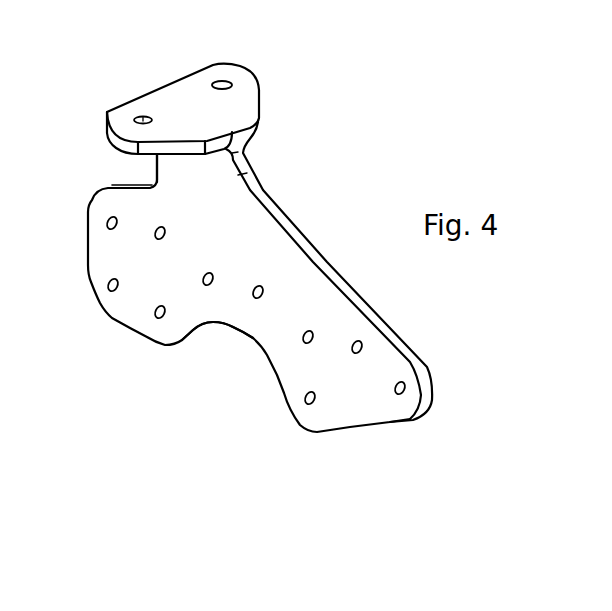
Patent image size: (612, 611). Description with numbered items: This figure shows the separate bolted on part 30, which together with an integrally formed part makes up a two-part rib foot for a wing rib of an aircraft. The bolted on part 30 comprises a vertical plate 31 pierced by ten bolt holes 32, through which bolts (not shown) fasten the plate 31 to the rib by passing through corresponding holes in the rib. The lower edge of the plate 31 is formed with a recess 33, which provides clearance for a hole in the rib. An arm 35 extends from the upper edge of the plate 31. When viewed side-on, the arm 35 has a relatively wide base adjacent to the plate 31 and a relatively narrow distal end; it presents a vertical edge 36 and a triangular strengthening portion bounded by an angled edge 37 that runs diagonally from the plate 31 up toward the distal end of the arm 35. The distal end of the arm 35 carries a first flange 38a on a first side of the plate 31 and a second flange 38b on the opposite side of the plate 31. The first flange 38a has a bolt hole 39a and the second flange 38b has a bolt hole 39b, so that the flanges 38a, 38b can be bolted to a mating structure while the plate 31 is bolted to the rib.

The bolted on part 30 is at (106, 346).
The vertical plate 31 is at (274, 330).
The bolt holes 32 is at (211, 275).
The recess 33 is at (223, 329).
The arm 35 is at (157, 168).
The vertical edge 36 is at (155, 158).
The angled edge 37 is at (250, 185).
The first flange 38a is at (148, 92).
The second flange 38b is at (263, 85).
The bolt hole 39a is at (138, 120).
The bolt hole 39b is at (224, 80).